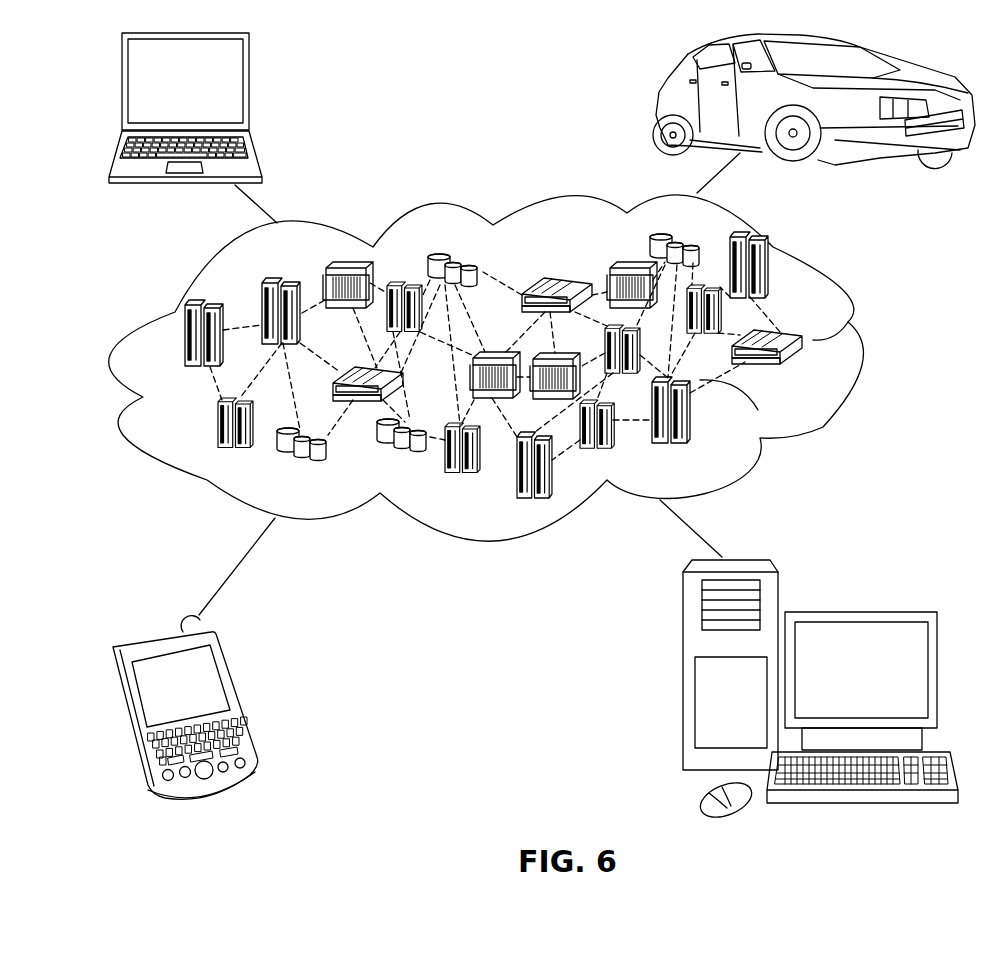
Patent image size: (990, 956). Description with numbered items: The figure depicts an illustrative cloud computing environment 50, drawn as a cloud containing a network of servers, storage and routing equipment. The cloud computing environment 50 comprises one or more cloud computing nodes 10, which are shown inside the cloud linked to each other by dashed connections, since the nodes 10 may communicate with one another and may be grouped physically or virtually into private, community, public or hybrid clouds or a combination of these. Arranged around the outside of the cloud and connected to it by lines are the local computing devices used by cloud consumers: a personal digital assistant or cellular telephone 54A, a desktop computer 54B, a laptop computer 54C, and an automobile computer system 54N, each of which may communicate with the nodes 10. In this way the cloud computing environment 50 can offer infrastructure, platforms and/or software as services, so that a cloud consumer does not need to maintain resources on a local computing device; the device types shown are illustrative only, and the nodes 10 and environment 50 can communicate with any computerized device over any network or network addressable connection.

The cloud computing node 10 is at (806, 370).
The cloud computing environment 50 is at (858, 347).
The personal digital assistant or cellular telephone 54A is at (242, 699).
The desktop computer 54B is at (860, 607).
The laptop computer 54C is at (250, 89).
The automobile computer system 54N is at (657, 104).